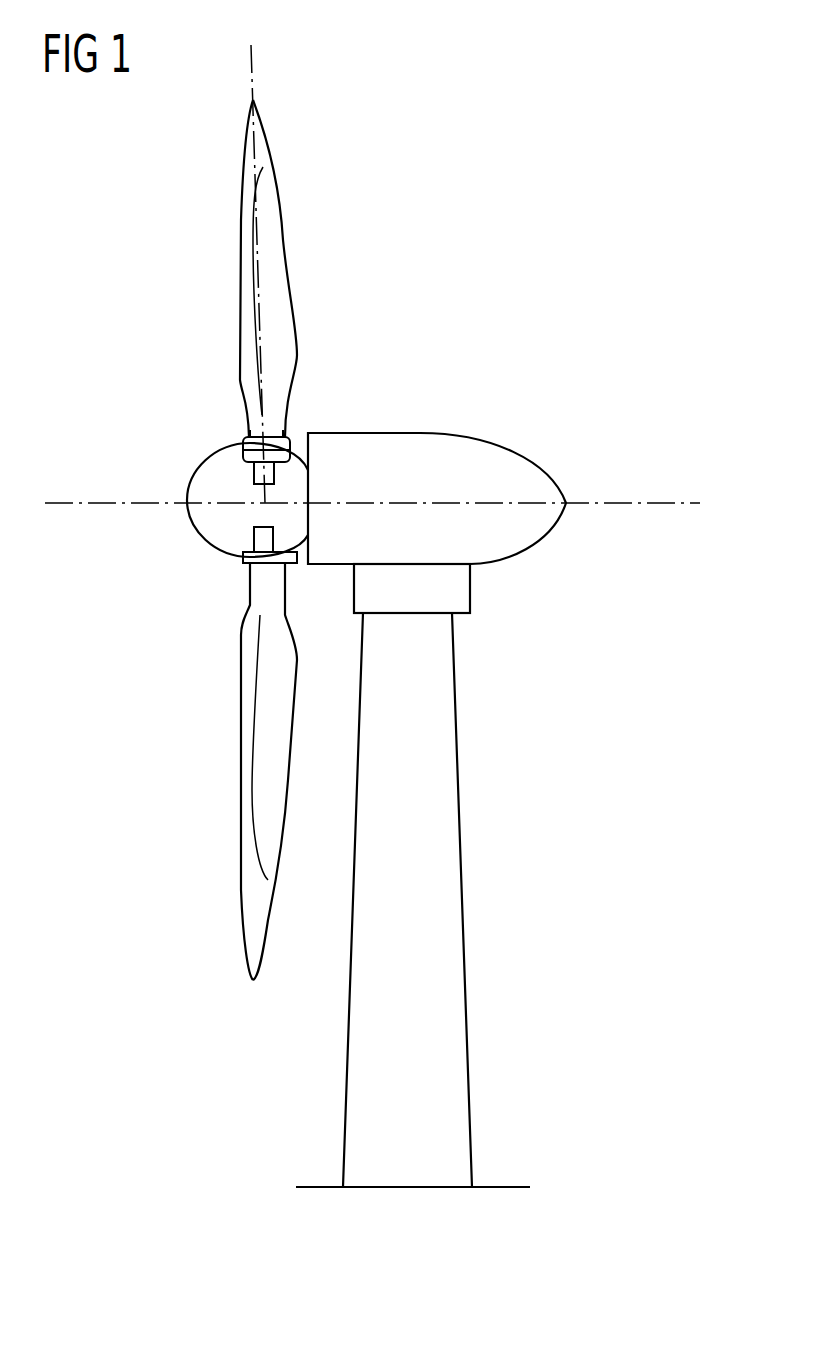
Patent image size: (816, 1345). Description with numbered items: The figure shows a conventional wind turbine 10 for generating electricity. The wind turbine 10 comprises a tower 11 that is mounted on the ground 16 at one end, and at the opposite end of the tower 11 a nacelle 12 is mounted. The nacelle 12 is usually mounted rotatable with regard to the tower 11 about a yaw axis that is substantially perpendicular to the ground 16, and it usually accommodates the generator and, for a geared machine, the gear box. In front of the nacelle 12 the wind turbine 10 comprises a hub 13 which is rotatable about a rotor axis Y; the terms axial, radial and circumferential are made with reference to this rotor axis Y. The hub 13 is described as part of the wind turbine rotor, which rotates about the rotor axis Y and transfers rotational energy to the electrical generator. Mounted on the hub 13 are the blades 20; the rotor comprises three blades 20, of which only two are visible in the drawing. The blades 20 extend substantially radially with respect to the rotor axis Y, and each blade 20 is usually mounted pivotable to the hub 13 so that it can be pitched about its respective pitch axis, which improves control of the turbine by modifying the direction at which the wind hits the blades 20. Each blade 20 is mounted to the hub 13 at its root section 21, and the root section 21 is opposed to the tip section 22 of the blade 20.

The wind turbine 10 is at (526, 316).
The tower 11 is at (455, 860).
The nacelle 12 is at (405, 433).
The hub 13 is at (166, 538).
The ground 16 is at (500, 1185).
The blade 20 is at (250, 536).
The root section 21 is at (286, 432).
The tip section 22 is at (256, 102).
The rotor axis Y is at (678, 503).